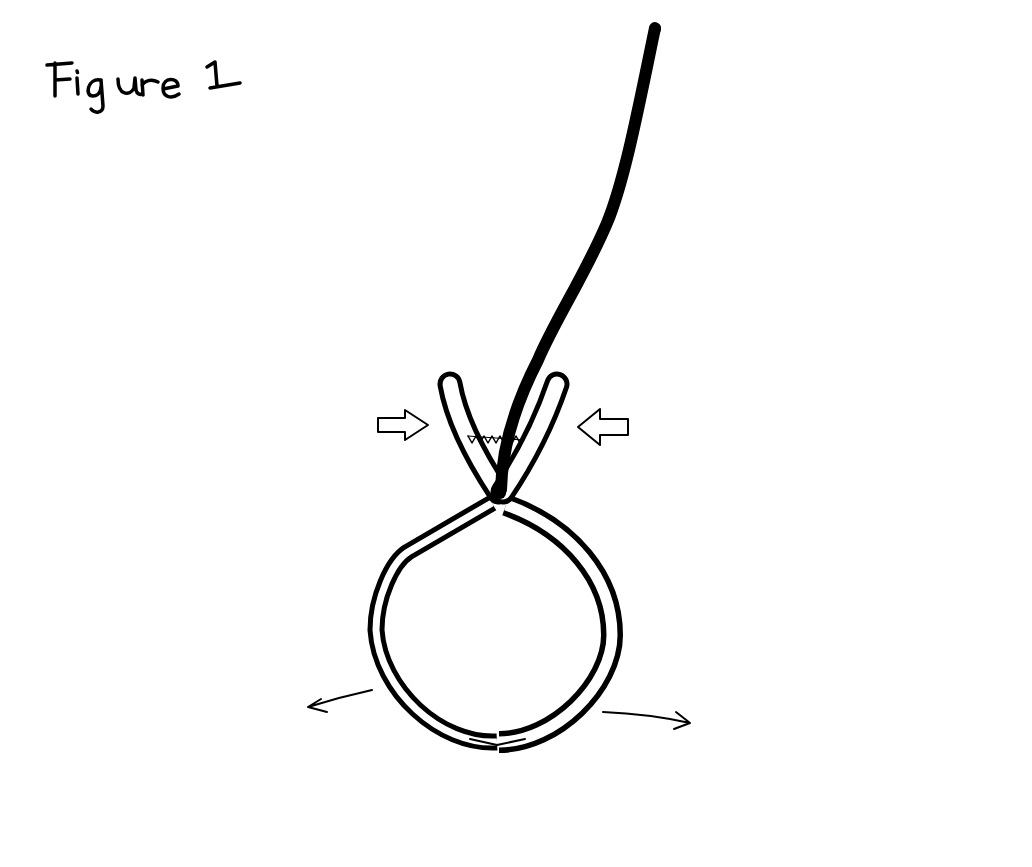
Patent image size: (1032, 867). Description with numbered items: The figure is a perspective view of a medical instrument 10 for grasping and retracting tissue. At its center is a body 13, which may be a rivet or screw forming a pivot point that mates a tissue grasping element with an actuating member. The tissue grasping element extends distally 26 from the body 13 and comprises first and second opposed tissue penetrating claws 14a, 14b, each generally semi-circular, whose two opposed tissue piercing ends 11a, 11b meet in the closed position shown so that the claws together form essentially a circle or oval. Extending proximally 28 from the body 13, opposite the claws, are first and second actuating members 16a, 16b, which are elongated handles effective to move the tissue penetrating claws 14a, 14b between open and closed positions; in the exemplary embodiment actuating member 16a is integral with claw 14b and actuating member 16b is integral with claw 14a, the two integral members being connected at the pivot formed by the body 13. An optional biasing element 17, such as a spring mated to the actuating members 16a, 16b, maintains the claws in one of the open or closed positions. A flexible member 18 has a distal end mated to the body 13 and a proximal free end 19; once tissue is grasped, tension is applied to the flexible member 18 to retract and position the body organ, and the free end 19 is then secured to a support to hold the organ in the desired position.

The medical instrument 10 is at (278, 236).
The tissue piercing end 11a is at (480, 746).
The tissue piercing end 11b is at (512, 746).
The body 13 is at (518, 492).
The first tissue penetrating claw 14a is at (368, 621).
The second tissue penetrating claw 14b is at (624, 628).
The first actuating member 16a is at (425, 382).
The second actuating member 16b is at (580, 383).
The biasing element 17 is at (470, 436).
The flexible member 18 is at (634, 150).
The free end 19 is at (662, 30).
The distal direction 26 is at (219, 751).
The proximal direction 28 is at (826, 398).